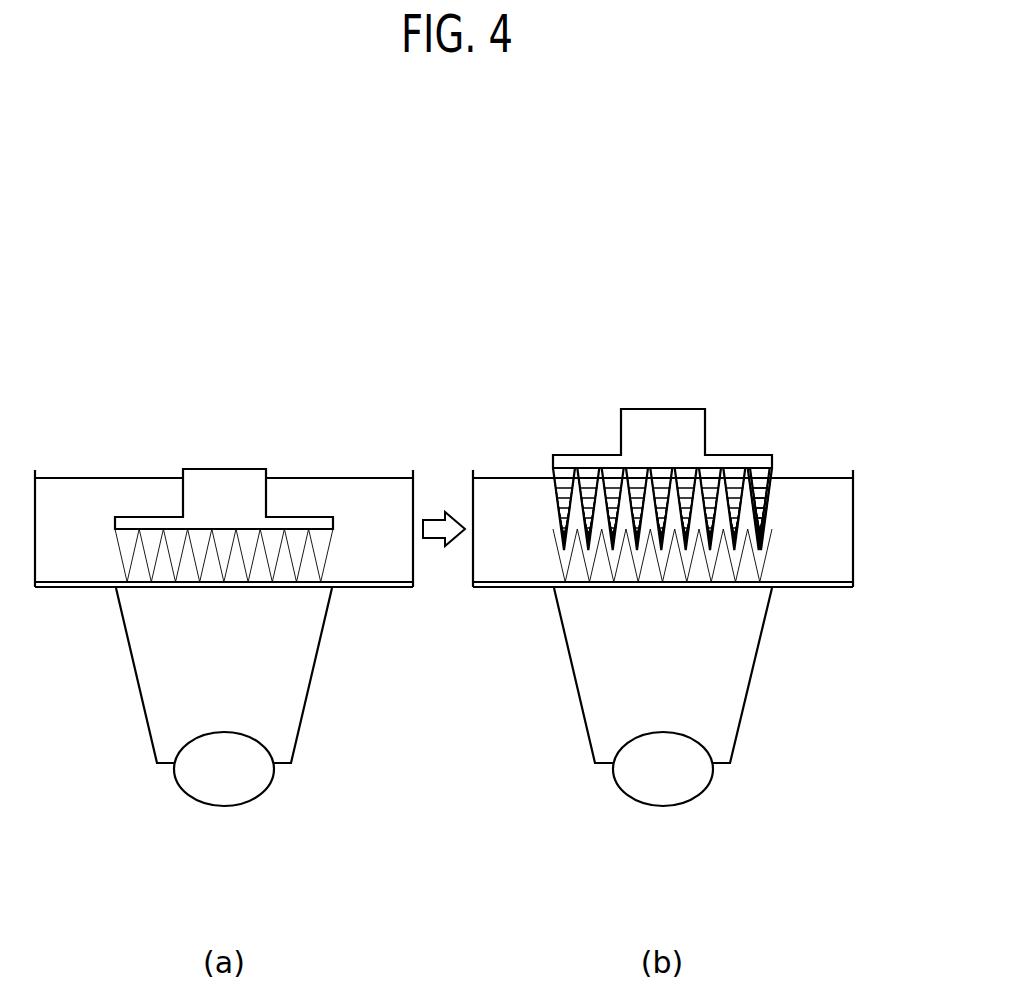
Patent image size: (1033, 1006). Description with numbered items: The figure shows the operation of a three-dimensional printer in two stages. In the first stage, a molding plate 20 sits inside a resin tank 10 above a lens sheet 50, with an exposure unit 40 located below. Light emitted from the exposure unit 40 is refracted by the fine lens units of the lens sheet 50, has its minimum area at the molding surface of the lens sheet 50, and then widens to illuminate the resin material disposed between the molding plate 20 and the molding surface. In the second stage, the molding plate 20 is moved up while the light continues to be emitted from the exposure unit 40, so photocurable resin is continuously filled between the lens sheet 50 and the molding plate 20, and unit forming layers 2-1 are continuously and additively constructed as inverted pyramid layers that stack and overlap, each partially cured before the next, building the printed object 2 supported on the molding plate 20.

The resin tank 10 is at (385, 488).
The molding plate 20 is at (138, 520).
The exposure unit 40 is at (225, 798).
The lens sheet 50 is at (308, 587).
The printed object 2 is at (800, 517).
The unit forming layer 2-1 is at (768, 492).